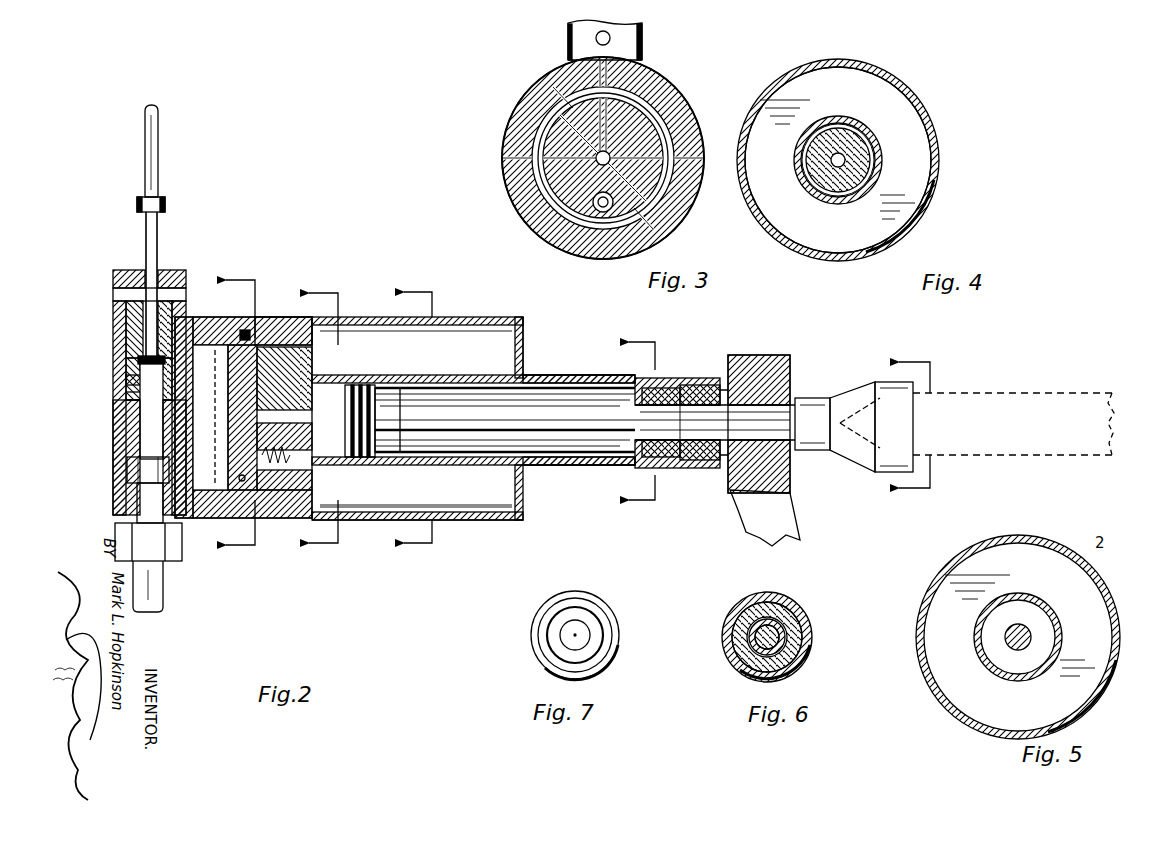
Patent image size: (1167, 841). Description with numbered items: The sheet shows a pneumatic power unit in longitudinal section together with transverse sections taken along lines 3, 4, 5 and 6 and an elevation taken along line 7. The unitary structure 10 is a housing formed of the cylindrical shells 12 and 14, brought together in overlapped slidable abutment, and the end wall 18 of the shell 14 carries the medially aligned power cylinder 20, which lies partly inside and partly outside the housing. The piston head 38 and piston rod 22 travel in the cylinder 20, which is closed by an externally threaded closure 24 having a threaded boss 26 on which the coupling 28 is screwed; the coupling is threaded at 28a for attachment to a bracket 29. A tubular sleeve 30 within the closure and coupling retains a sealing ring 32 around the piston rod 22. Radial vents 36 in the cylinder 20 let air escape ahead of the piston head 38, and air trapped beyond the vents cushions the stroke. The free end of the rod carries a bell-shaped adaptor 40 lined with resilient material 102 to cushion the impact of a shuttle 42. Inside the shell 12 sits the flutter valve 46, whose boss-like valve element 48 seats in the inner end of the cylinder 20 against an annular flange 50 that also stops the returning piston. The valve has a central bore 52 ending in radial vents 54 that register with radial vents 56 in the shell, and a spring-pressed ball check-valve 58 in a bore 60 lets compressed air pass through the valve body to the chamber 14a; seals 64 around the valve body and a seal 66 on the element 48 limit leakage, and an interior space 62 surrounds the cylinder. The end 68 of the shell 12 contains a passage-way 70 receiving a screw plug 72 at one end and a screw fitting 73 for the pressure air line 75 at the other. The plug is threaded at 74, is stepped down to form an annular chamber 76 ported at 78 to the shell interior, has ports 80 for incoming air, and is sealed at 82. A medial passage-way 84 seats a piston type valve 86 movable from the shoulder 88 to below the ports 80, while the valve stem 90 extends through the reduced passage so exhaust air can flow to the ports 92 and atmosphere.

In FIG. 2, the unitary structure 10 is at (521, 530).
In FIG. 3, the unitary structure 10 is at (503, 97).
In FIG. 4, the unitary structure 10 is at (934, 110).
In FIG. 5, the unitary structure 10 is at (1052, 536).
In FIG. 2, the cylindrical shell 12 is at (258, 518).
In FIG. 2, the cylindrical shell 14 is at (312, 522).
In FIG. 4, the cylindrical shell 14 is at (935, 132).
In FIG. 2, the chamber 14a is at (470, 522).
In FIG. 2, the end wall 18 is at (535, 340).
In FIG. 2, the power cylinder 20 is at (548, 383).
In FIG. 4, the power cylinder 20 is at (878, 188).
In FIG. 5, the power cylinder 20 is at (1000, 628).
In FIG. 6, the power cylinder 20 is at (776, 602).
In FIG. 2, the piston rod 22 is at (570, 405).
In FIG. 5, the piston rod 22 is at (1012, 630).
In FIG. 6, the piston rod 22 is at (800, 648).
In FIG. 7, the piston rod 22 is at (582, 636).
In FIG. 2, the closure 24 is at (640, 468).
In FIG. 6, the closure 24 is at (790, 612).
In FIG. 2, the threaded boss 26 is at (686, 466).
In FIG. 6, the threaded boss 26 is at (800, 636).
In FIG. 2, the coupling 28 is at (714, 468).
In FIG. 2, the threaded portion of coupling 28a is at (795, 386).
In FIG. 2, the bracket 29 is at (750, 524).
In FIG. 2, the tubular sleeve 30 is at (696, 388).
In FIG. 6, the tubular sleeve 30 is at (790, 625).
In FIG. 2, the sealing ring 32 is at (650, 388).
In FIG. 2, the radial vents 36 is at (548, 372).
In FIG. 2, the piston head 38 is at (377, 395).
In FIG. 2, the adaptor 40 is at (888, 462).
In FIG. 7, the adaptor 40 is at (606, 607).
In FIG. 2, the shuttle 42 is at (1022, 392).
In FIG. 2, the flutter valve 46 is at (312, 368).
In FIG. 2, the valve element 48 is at (377, 438).
In FIG. 4, the valve element 48 is at (822, 198).
In FIG. 2, the annular flange 50 is at (375, 420).
In FIG. 2, the central bore 52 is at (278, 417).
In FIG. 3, the central bore 52 is at (598, 162).
In FIG. 4, the central bore 52 is at (832, 165).
In FIG. 2, the radial vents 54 is at (242, 368).
In FIG. 3, the radial vents 54 is at (572, 130).
In FIG. 2, the radial vents 56 is at (262, 318).
In FIG. 3, the radial vents 56 is at (688, 95).
In FIG. 2, the ball check-valve 58 is at (240, 460).
In FIG. 3, the ball check-valve 58 is at (587, 215).
In FIG. 2, the bore 60 is at (322, 468).
In FIG. 4, the interior space 62 is at (915, 184).
In FIG. 5, the interior space 62 is at (1086, 596).
In FIG. 2, the seals 64 is at (245, 340).
In FIG. 2, the seal 66 is at (396, 380).
In FIG. 4, the seal 66 is at (886, 154).
In FIG. 2, the end of shell 68 is at (112, 470).
In FIG. 2, the passage-way 70 is at (140, 440).
In FIG. 2, the screw plug 72 is at (125, 341).
In FIG. 3, the screw plug 72 is at (645, 34).
In FIG. 2, the screw fitting 73 is at (175, 548).
In FIG. 2, the threaded screw fitting 74 is at (112, 331).
In FIG. 2, the pressure air line 75 is at (166, 592).
In FIG. 2, the annular chamber 76 is at (130, 400).
In FIG. 2, the port 78 is at (140, 412).
In FIG. 2, the ports 80 is at (128, 380).
In FIG. 2, the seal 82 is at (210, 417).
In FIG. 2, the passage-way 84 is at (128, 395).
In FIG. 2, the piston type valve 86 is at (139, 366).
In FIG. 2, the shoulder 88 is at (138, 358).
In FIG. 2, the valve stem 90 is at (166, 278).
In FIG. 2, the ports 92 is at (118, 293).
In FIG. 3, the ports 92 is at (596, 40).
In FIG. 7, the resilient material 102 is at (606, 623).
In FIG. 2, the section line 3— 3 is at (230, 419).
In FIG. 2, the section line 4— 4 is at (324, 420).
In FIG. 2, the section line 5— 5 is at (418, 418).
In FIG. 2, the section line 6— 6 is at (642, 419).
In FIG. 2, the line 7— 7 is at (916, 426).